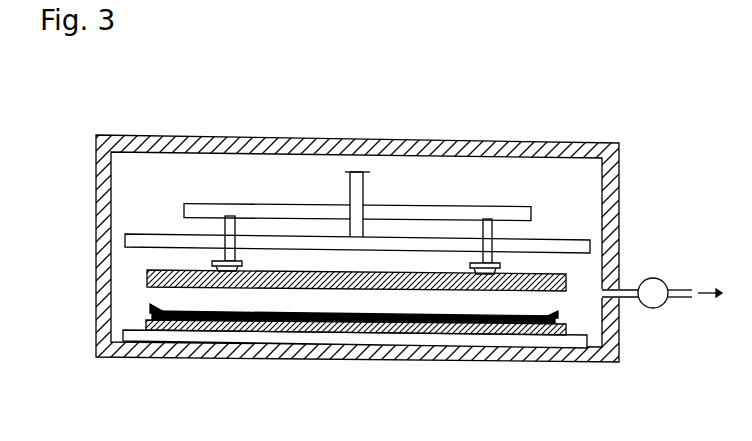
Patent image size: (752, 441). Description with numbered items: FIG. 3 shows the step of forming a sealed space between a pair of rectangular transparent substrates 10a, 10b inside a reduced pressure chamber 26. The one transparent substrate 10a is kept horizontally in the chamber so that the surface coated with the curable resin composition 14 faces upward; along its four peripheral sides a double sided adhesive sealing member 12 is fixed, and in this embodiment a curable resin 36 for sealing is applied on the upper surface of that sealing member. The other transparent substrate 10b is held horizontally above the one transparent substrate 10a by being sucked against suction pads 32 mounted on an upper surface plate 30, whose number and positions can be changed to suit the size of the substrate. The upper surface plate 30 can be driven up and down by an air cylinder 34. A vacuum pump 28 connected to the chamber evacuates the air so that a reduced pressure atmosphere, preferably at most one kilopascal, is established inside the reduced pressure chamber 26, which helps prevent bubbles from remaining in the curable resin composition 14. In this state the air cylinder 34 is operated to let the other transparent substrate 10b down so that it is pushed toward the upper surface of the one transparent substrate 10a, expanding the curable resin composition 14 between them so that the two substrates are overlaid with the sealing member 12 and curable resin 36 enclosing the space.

The reduced pressure chamber 26 is at (437, 134).
The vacuum pump 28 is at (650, 278).
The upper surface plate 30 is at (548, 240).
The suction pads 32 is at (243, 263).
The air cylinder 34 is at (364, 191).
The curable resin for sealing 36 is at (156, 307).
The transparent substrate 10a is at (370, 346).
The transparent substrate 10b is at (147, 274).
The sealing member 12 is at (557, 319).
The curable resin composition 14 is at (405, 313).